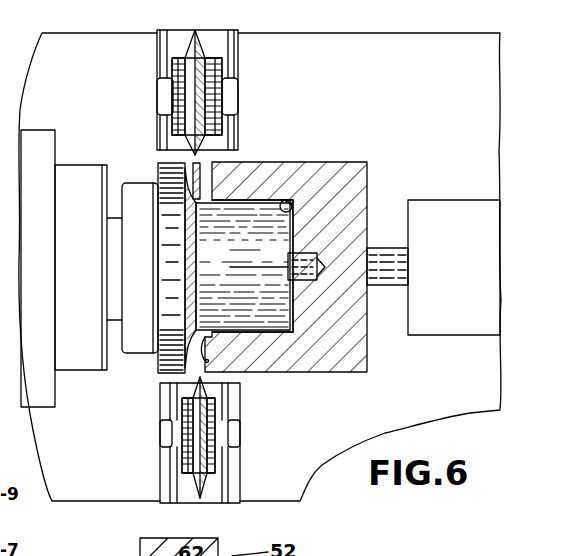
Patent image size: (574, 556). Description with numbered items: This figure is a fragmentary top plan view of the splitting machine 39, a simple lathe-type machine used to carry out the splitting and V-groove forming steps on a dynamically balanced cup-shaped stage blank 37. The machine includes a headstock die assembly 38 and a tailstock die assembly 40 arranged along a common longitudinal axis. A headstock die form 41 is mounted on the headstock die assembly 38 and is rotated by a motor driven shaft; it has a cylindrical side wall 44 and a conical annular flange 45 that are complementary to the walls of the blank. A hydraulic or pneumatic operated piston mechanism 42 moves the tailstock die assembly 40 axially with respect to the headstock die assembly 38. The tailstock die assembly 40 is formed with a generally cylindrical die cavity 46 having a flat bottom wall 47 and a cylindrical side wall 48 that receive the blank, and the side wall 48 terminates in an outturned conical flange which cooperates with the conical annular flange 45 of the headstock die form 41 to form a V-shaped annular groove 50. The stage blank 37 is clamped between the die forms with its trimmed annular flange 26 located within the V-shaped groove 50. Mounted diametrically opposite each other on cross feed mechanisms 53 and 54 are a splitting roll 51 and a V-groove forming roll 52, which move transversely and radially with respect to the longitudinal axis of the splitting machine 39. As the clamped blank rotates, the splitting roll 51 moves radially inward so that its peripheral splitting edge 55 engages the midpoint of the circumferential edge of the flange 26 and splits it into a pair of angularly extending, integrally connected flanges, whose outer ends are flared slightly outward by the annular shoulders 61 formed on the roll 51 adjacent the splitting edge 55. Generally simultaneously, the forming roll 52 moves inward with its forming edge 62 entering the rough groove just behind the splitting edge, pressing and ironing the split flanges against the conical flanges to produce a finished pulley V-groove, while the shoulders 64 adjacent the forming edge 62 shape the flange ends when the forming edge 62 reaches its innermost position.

The annular flange 26 is at (188, 370).
The cup-shaped stage blank 37 is at (265, 192).
The headstock die assembly 38 is at (80, 377).
The splitting machine 39 is at (363, 98).
The tailstock die assembly 40 is at (325, 250).
The headstock die form 41 is at (268, 287).
The piston mechanism 42 is at (468, 284).
The cylindrical side wall 44 is at (230, 237).
The conical annular flange 45 is at (197, 202).
The die cavity 46 is at (283, 337).
The flat bottom wall 47 is at (293, 302).
The cylindrical side wall 48 is at (285, 205).
The V-shaped annular groove 50 is at (208, 361).
The splitting roll 51 is at (157, 440).
The V-groove forming roll 52 is at (152, 87).
The cross feed mechanism 53 is at (225, 480).
The cross feed mechanism 54 is at (230, 58).
The splitting edge 55 is at (213, 460).
The annular shoulders 61 is at (181, 463).
The forming edge 62 is at (200, 30).
The shoulders 64 is at (182, 60).